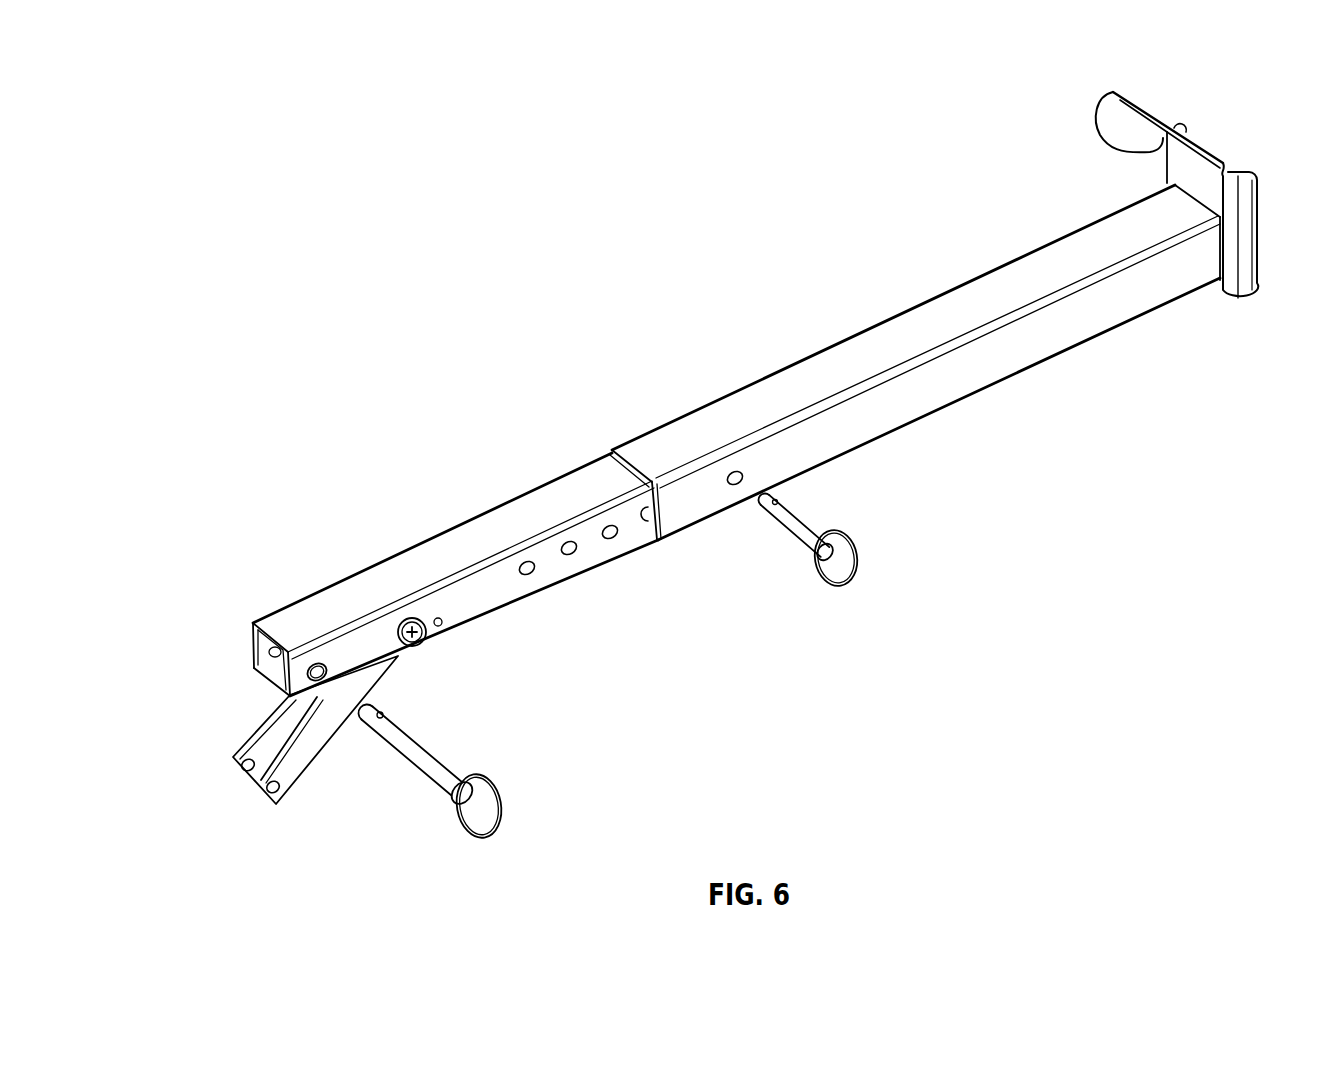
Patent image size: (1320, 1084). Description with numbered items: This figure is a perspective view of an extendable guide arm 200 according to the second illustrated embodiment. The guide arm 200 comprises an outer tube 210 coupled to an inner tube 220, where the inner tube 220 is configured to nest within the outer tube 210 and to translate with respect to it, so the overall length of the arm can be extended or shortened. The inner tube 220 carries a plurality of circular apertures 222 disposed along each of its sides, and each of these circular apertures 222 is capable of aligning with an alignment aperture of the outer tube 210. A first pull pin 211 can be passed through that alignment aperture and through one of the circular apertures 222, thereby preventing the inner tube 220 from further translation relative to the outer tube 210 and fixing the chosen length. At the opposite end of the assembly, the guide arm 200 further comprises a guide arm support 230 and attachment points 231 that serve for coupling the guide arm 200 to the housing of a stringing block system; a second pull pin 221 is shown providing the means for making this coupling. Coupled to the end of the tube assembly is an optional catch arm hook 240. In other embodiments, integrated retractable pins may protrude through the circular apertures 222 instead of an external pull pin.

The guide arm 200 is at (213, 177).
The outer tube 210 is at (1092, 317).
The first pull pin 211 is at (803, 522).
The inner tube 220 is at (447, 545).
The second pull pin 221 is at (418, 742).
The circular apertures 222 is at (617, 534).
The guide arm support 230 is at (307, 767).
The attachment points 231 is at (312, 658).
The catch arm hook 240 is at (1204, 147).